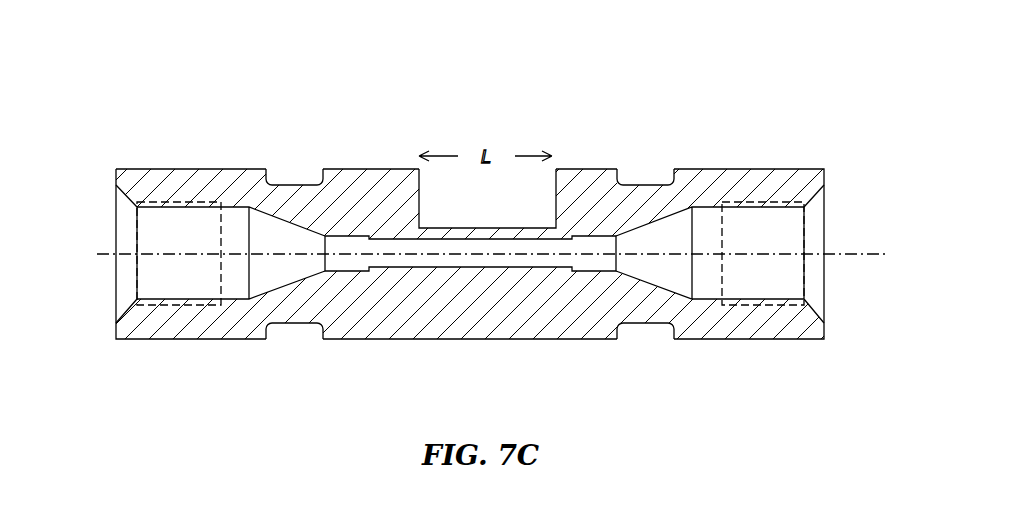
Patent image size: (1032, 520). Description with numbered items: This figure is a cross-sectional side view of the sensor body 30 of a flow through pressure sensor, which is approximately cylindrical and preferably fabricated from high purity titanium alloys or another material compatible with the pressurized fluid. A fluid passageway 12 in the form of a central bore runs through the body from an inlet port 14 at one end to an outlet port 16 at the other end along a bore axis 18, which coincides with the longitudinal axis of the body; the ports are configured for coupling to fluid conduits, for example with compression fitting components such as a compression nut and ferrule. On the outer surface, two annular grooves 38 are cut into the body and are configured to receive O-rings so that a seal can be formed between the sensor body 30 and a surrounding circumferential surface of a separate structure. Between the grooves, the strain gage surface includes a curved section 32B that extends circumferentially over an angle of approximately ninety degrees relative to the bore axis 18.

The sensor body 30 is at (695, 136).
The annular grooves 38 is at (297, 184).
The curved section 32B is at (450, 225).
The outlet port 16 is at (99, 272).
The inlet port 14 is at (852, 278).
The fluid passageway 12 is at (459, 267).
The bore axis 18 is at (849, 252).